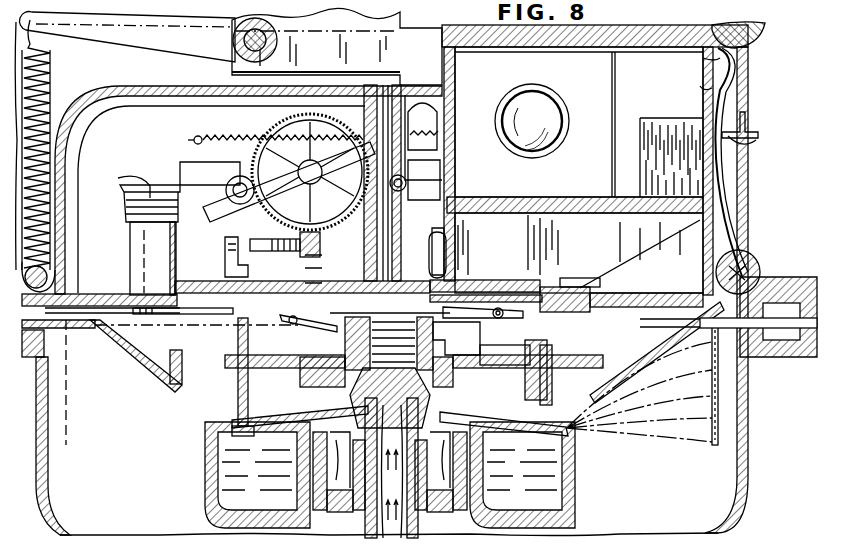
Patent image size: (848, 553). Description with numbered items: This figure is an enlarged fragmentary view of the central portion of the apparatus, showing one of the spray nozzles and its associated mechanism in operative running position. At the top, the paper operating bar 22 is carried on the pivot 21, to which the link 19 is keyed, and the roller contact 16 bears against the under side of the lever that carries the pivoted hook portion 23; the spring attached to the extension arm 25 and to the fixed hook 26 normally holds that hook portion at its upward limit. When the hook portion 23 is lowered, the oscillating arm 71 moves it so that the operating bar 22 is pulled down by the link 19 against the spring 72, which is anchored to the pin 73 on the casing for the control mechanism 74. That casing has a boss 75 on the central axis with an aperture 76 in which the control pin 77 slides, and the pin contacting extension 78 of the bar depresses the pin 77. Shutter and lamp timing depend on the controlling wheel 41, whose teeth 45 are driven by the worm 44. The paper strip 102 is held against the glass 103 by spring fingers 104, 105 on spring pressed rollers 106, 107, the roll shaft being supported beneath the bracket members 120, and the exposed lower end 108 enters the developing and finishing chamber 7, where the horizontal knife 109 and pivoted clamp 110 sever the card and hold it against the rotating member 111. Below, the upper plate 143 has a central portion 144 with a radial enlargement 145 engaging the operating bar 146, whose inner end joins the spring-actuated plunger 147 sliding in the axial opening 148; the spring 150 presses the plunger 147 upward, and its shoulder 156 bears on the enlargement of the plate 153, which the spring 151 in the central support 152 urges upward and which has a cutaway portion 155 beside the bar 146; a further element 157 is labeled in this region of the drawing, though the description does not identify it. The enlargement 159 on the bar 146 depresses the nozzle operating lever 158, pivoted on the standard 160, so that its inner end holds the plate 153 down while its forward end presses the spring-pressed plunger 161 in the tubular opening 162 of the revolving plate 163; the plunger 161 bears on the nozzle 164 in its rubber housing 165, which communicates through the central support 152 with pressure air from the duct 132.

The developing and finishing chamber 7 is at (728, 466).
The roller contact 16 is at (424, 175).
The link 19 is at (232, 126).
The pivot 21 is at (228, 62).
The paper operating bar 22 is at (128, 42).
The pivoted hook portion 23 is at (136, 176).
The extension arm 25 is at (198, 160).
The fixed hook 26 is at (458, 150).
The controlling wheel 41 is at (244, 214).
The worm 44 is at (224, 262).
The teeth 45 is at (228, 236).
The oscillating arm 71 is at (116, 196).
The spring 72 is at (52, 108).
The pin 73 is at (52, 287).
The casing for the control mechanism 74 is at (85, 132).
The boss 75 is at (423, 126).
The aperture 76 is at (404, 100).
The control pin 77 is at (395, 80).
The pin contacting extension 78 is at (362, 70).
The paper strip 102 is at (722, 60).
The glass 103 is at (715, 90).
The spring finger 104 is at (736, 108).
The spring finger 105 is at (722, 188).
The spring pressed roller 106 is at (760, 46).
The spring pressed roller 107 is at (752, 262).
The lower end of strip material 108 is at (718, 400).
The horizontal knife 109 is at (678, 293).
The pivoted clamp 110 is at (782, 292).
The rotating member 111 is at (620, 352).
The bracket member 120 is at (548, 106).
The duct 132 is at (368, 538).
The upper plate 143 is at (305, 272).
The central portion 144 is at (600, 293).
The radial enlargement 145 is at (545, 287).
The operating bar 146 is at (455, 295).
The spring-actuated plunger 147 is at (450, 230).
The axial opening 148 is at (289, 172).
The spring 150 is at (456, 338).
The spring 151 is at (308, 317).
The central support 152 is at (345, 330).
The plate 153 is at (352, 305).
The cutaway portion 155 is at (452, 190).
The shoulder 156 is at (325, 266).
The rod 157 is at (305, 334).
The nozzle operating lever 158 is at (480, 307).
The enlargement 159 is at (560, 276).
The standard 160 is at (500, 352).
The spring-pressed plunger 161 is at (522, 393).
The tubular opening 162 is at (546, 392).
The revolving plate 163 is at (230, 396).
The nozzle 164 is at (566, 430).
The rubber housing 165 is at (390, 475).